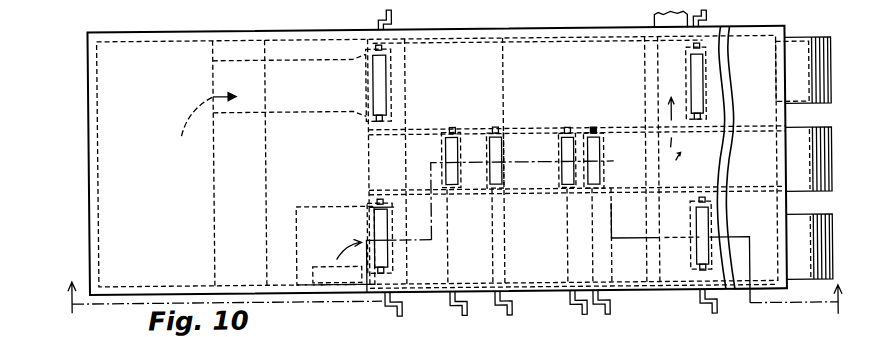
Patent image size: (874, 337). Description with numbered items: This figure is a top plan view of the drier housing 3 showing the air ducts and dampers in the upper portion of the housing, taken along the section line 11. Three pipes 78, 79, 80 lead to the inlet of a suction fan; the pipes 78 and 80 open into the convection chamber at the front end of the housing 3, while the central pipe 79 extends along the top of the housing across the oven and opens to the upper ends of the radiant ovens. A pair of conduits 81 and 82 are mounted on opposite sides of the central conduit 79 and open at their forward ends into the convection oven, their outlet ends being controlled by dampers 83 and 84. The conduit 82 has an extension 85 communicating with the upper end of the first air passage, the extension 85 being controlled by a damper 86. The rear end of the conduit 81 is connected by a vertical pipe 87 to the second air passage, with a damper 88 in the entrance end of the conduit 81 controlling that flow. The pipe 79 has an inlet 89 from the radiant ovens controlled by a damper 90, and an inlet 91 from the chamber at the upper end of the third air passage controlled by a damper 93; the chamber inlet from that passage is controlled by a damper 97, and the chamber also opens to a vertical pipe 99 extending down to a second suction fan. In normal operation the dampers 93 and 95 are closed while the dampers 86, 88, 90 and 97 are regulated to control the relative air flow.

The housing 3 is at (523, 30).
The section line 11- 11 is at (86, 336).
The pipe 78 is at (807, 290).
The central pipe 79 is at (748, 133).
The pipe 80 is at (805, 45).
The conduit 81 is at (623, 272).
The conduit 82 is at (627, 50).
The damper 83 is at (713, 234).
The damper 84 is at (713, 85).
The extension 85 is at (290, 61).
The damper 86 is at (401, 31).
The vertical pipe 87 is at (321, 263).
The damper 88 is at (392, 257).
The inlet 89 is at (437, 151).
The damper 90 is at (463, 150).
The inlet 91 is at (548, 148).
The damper 93 is at (559, 176).
The damper 95 is at (495, 156).
The damper 97 is at (603, 152).
The vertical pipe 99 is at (683, 180).